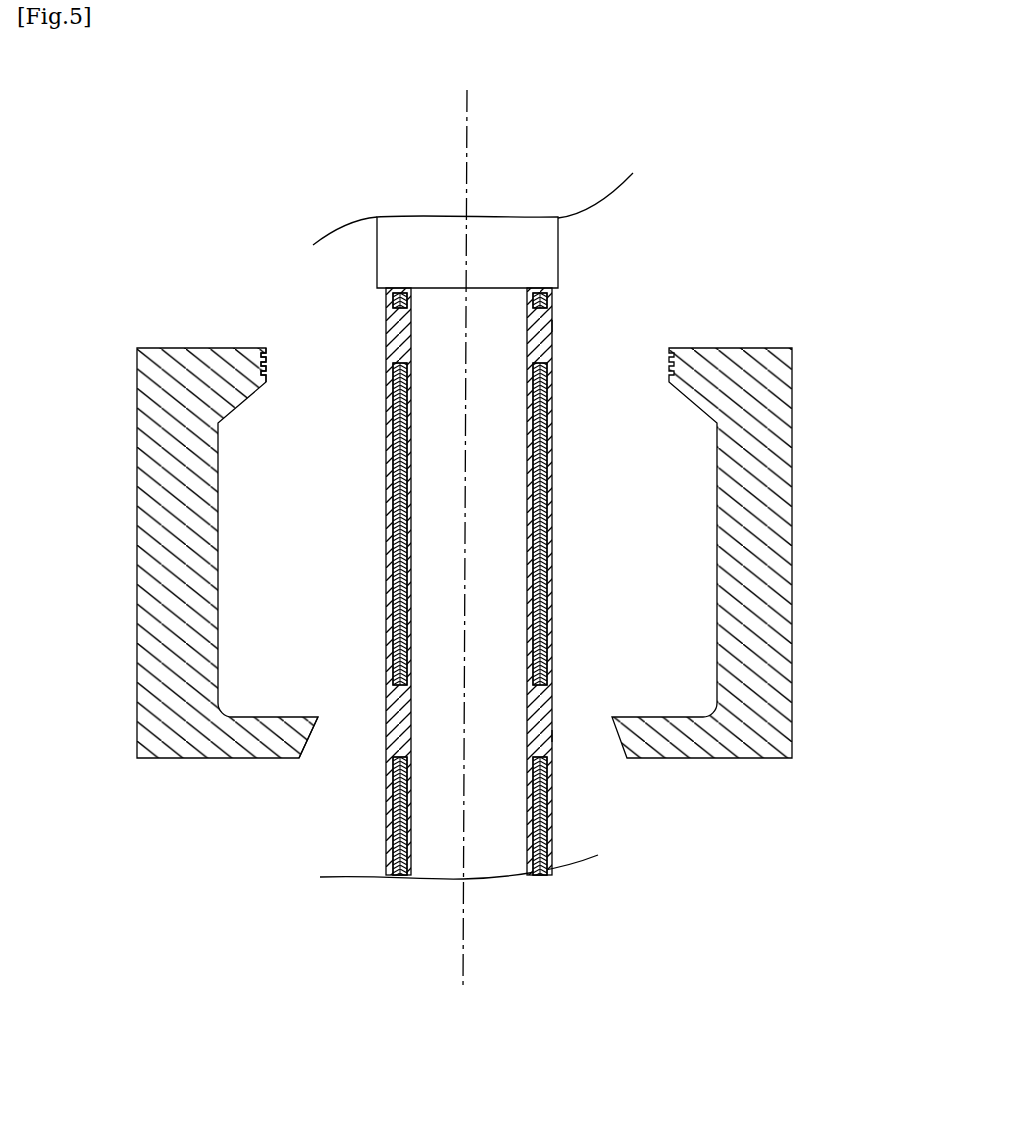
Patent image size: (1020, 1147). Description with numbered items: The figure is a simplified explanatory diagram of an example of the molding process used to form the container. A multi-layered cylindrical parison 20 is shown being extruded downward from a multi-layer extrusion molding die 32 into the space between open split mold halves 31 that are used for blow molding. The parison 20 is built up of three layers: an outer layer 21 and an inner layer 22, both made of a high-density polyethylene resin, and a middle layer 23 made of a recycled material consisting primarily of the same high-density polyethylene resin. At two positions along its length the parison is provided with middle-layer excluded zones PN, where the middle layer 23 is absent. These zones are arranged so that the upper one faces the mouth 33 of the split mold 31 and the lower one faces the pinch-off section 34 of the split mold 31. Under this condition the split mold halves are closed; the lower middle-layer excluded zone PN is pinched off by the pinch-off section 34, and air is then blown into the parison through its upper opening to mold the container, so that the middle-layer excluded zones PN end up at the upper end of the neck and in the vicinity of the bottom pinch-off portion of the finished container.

The multi-layered cylindrical parison 20 is at (649, 562).
The outer layer 21 is at (553, 542).
The inner layer 22 is at (553, 615).
The middle layer 23 is at (553, 570).
The split mold halves 31 is at (153, 358).
The multi-layer extrusion molding die 32 is at (540, 250).
The mouth 33 is at (274, 356).
The pinch-off section 34 is at (327, 740).
The middle-layer excluded zones PN is at (572, 325).